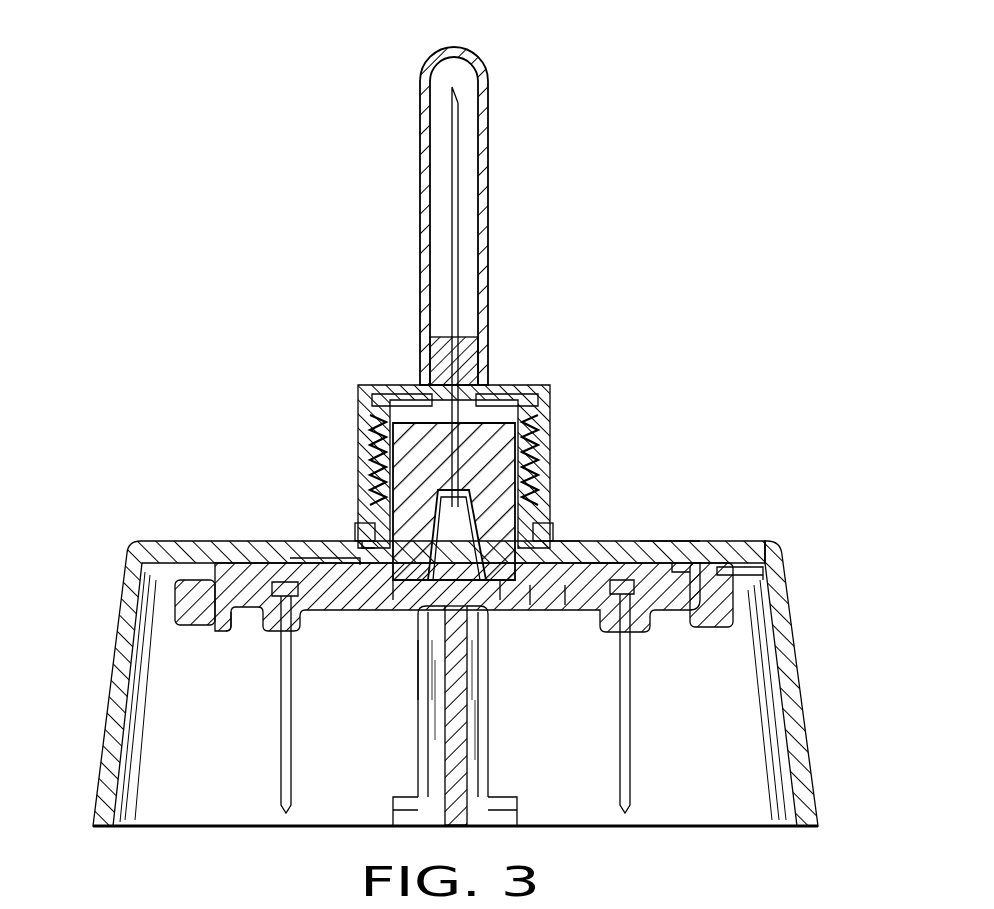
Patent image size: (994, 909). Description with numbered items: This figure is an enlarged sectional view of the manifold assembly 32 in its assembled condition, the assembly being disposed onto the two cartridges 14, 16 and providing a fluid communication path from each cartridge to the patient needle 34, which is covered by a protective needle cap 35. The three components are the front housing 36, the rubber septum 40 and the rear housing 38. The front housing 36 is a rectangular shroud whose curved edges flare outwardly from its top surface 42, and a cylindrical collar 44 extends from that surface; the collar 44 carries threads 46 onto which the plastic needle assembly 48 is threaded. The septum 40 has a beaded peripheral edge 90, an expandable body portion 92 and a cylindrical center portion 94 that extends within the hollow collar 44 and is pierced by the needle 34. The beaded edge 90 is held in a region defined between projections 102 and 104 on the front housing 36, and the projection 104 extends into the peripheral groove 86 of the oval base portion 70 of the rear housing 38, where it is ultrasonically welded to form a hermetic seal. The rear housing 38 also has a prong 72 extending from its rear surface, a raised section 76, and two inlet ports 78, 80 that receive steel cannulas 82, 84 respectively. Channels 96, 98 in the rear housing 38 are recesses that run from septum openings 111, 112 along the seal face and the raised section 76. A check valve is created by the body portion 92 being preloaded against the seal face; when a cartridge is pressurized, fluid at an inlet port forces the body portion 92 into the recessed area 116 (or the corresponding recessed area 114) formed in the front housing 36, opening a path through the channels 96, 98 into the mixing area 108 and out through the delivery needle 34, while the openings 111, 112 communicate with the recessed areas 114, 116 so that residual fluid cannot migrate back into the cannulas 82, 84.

The cartridge 14 is at (152, 714).
The cartridge 16 is at (752, 716).
The manifold assembly 32 is at (660, 372).
The patient needle 34 is at (464, 238).
The protective needle cap 35 is at (488, 106).
The front housing 36 is at (302, 544).
The rear housing 38 is at (418, 630).
The rubber septum 40 is at (598, 560).
The top surface 42 is at (667, 552).
The cylindrical collar 44 is at (440, 505).
The threads 46 is at (550, 432).
The plastic needle assembly 48 is at (508, 397).
The oval base portion 70 is at (178, 590).
The prong 72 is at (478, 746).
The raised section 76 is at (395, 465).
The inlet port 78 is at (252, 610).
The inlet port 80 is at (600, 603).
The steel cannula 82 is at (285, 751).
The steel cannula 84 is at (625, 719).
The peripheral groove 86 is at (195, 627).
The beaded peripheral edge 90 is at (718, 567).
The expandable body portion 92 is at (652, 553).
The cylindrical center portion 94 is at (552, 476).
The channel 96 is at (393, 584).
The channel 98 is at (505, 598).
The projection 102 is at (683, 563).
The projection 104 is at (763, 571).
The mixing area 108 is at (540, 497).
The septum opening 111 is at (360, 548).
The septum opening 112 is at (540, 602).
The recessed area 114 is at (290, 560).
The recessed area 116 is at (597, 567).